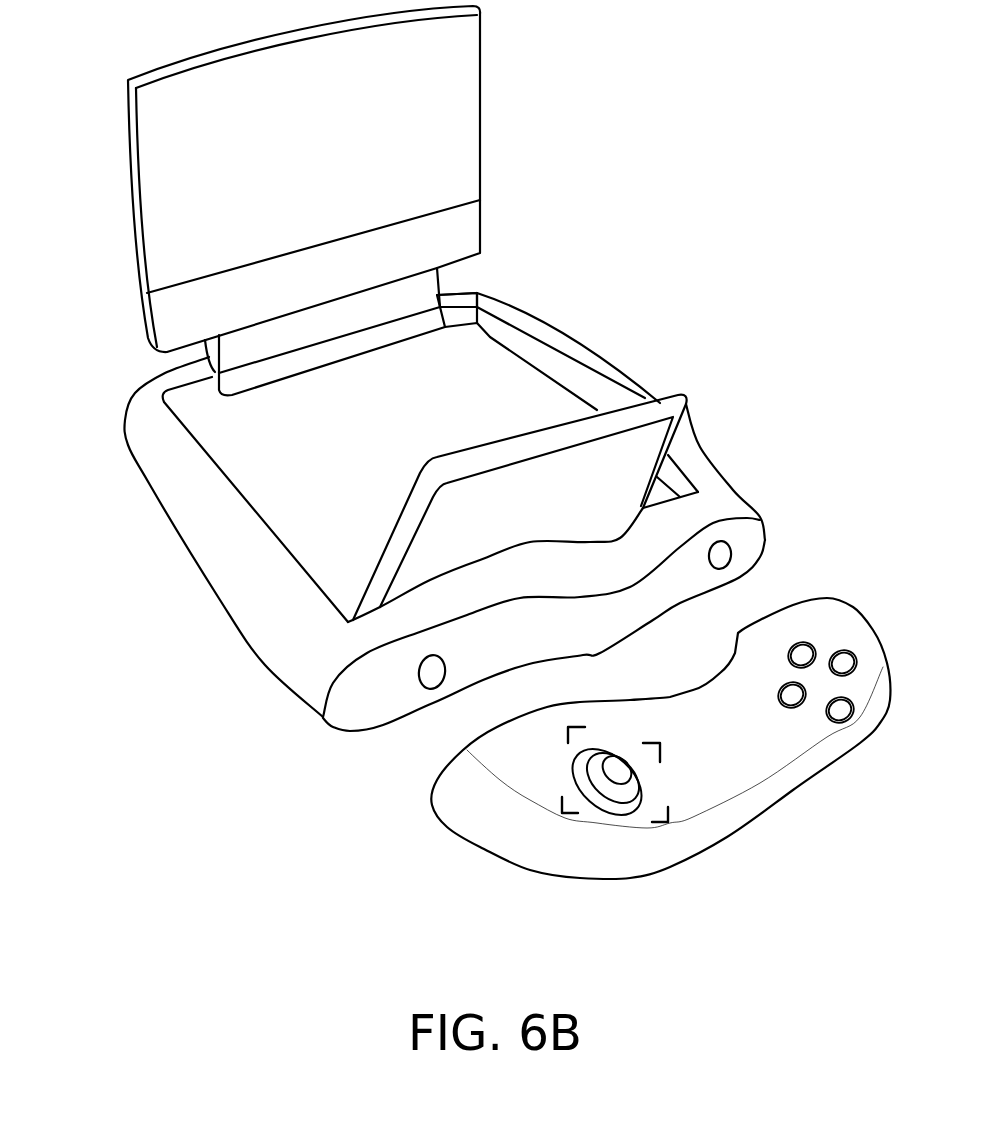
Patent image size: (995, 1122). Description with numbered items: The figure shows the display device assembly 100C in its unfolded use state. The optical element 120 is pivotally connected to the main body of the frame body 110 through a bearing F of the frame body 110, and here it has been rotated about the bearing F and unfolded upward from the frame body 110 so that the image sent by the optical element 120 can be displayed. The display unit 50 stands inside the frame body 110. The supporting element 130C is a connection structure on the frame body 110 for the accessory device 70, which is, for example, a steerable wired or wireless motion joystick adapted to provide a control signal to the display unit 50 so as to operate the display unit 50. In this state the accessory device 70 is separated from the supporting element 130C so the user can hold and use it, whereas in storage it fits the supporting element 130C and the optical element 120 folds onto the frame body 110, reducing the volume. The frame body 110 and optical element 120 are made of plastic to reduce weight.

The display device assembly 100C is at (683, 148).
The optical element 120 is at (473, 88).
The frame body 110 is at (188, 520).
The supporting element 130C is at (432, 672).
The bearing F is at (433, 317).
The display unit 50 is at (647, 445).
The accessory device 70 is at (577, 848).